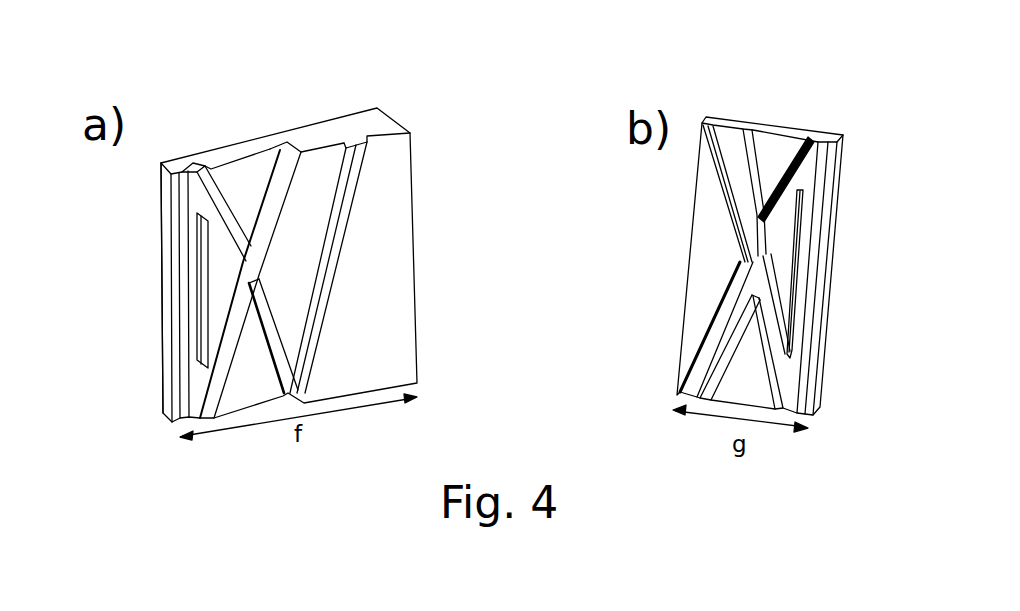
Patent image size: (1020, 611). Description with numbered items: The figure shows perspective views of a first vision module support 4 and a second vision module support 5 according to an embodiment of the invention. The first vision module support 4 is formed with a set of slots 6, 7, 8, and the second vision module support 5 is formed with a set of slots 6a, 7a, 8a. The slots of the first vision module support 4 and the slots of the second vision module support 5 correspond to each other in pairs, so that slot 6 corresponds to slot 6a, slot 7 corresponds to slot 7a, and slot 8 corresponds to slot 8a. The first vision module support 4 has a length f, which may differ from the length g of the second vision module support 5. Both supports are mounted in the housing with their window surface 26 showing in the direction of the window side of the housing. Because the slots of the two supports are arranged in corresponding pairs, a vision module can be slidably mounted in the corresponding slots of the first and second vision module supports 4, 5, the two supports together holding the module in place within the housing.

The first vision module support 4 is at (325, 121).
The second vision module support 5 is at (701, 125).
The slot 6 is at (195, 248).
The slot 6a is at (797, 343).
The slot 7 is at (213, 212).
The slot 7a is at (812, 163).
The slot 8 is at (280, 152).
The slot 8a is at (722, 140).
The window surface 26 is at (168, 298).